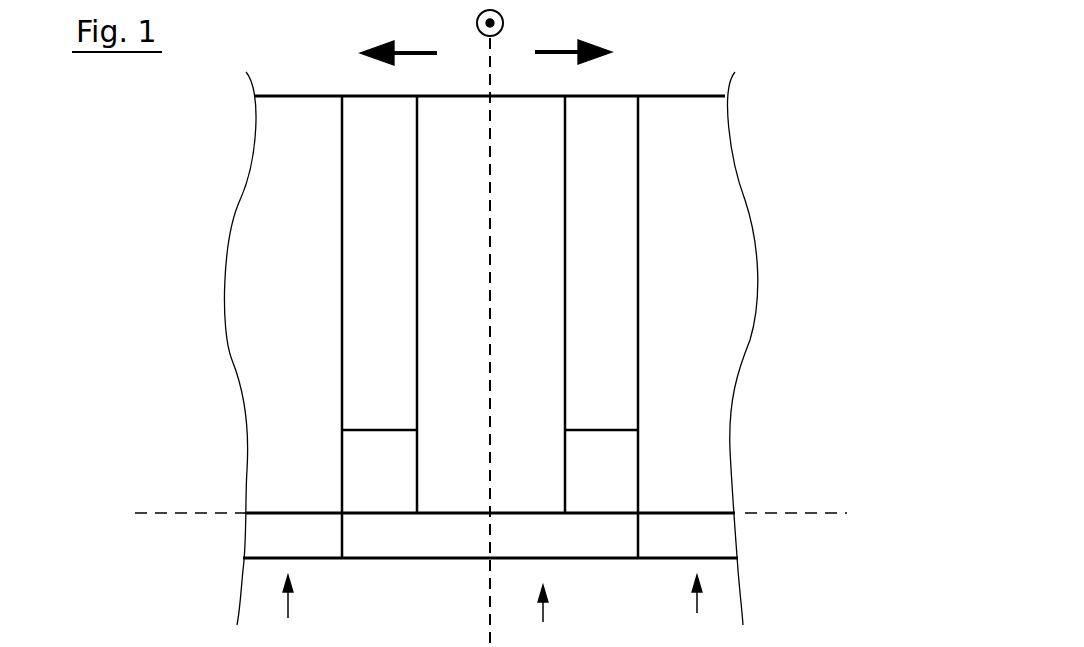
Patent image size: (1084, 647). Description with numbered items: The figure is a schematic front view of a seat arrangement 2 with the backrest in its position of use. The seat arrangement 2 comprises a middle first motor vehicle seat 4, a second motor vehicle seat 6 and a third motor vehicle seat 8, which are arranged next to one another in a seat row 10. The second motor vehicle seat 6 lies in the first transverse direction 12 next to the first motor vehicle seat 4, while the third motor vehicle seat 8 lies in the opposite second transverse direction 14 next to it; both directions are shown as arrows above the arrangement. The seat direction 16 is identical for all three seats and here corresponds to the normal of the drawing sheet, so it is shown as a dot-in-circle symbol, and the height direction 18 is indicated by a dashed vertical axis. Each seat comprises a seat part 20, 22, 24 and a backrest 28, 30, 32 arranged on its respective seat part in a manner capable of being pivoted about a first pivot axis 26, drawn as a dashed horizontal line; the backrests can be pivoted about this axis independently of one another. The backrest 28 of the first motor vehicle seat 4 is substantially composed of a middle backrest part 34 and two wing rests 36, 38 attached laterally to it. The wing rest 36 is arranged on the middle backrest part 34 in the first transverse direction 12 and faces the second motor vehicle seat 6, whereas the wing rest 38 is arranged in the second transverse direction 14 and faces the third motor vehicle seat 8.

The seat arrangement 2 is at (838, 92).
The first motor vehicle seat 4 is at (543, 616).
The second motor vehicle seat 6 is at (697, 609).
The third motor vehicle seat 8 is at (288, 610).
The seat row 10 is at (782, 331).
The first transverse direction 12 is at (560, 50).
The second transverse direction 14 is at (413, 50).
The seat direction 16 is at (477, 23).
The height direction 18 is at (491, 627).
The seat part 20 is at (580, 550).
The seat part 22 is at (697, 551).
The seat part 24 is at (312, 549).
The first pivot axis 26 is at (790, 515).
The backrest 28 is at (530, 172).
The backrest 30 is at (728, 235).
The backrest 32 is at (250, 236).
The middle backrest part 34 is at (540, 283).
The wing rest 36 is at (620, 283).
The wing rest 38 is at (400, 283).